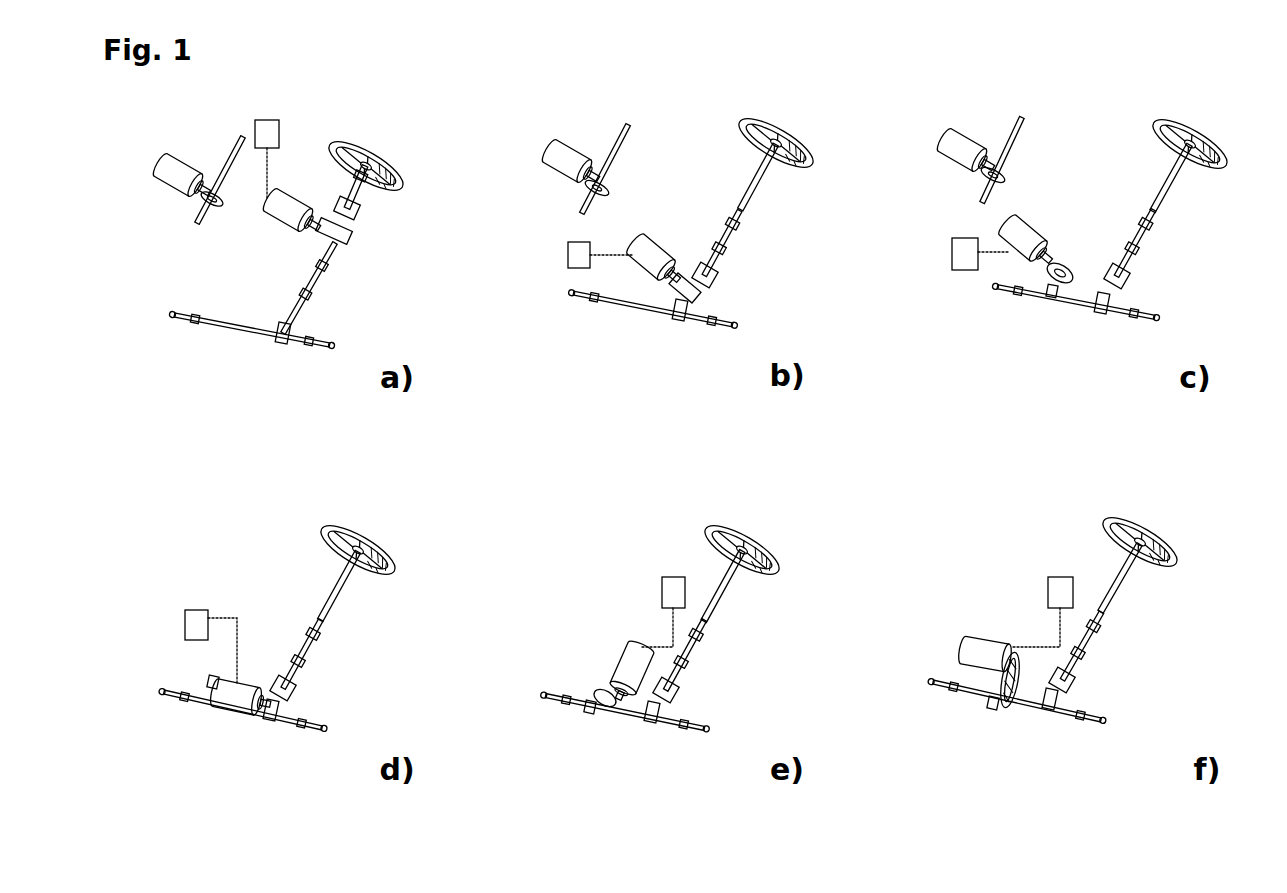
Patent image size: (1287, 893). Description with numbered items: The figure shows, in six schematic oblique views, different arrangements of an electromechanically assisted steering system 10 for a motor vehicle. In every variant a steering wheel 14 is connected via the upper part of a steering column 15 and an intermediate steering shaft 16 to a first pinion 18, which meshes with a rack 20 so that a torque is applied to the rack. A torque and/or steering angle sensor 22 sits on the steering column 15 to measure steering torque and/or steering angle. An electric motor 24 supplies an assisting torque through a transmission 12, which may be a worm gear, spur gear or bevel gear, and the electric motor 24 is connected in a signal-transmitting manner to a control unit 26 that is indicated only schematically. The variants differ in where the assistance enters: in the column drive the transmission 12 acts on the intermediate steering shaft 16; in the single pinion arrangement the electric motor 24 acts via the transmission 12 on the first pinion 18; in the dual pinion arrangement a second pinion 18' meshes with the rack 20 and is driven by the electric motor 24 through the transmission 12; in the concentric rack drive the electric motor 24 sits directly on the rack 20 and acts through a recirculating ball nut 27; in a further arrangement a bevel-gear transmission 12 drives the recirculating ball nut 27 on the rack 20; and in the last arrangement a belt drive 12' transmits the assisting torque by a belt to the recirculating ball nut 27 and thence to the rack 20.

The steering system 10 is at (331, 104).
The transmission 12 is at (708, 446).
The belt drive 12' is at (1022, 710).
The steering wheel 14 is at (383, 163).
The steering column 15 is at (367, 196).
The intermediate steering shaft 16 is at (239, 140).
The first pinion 18 is at (714, 538).
The second pinion 18' is at (980, 259).
The rack 20 is at (222, 323).
The torque and/or steering angle sensor 22 is at (337, 200).
The electric motor 24 is at (182, 159).
The control unit 26 is at (267, 120).
The recirculating ball nut 27 is at (210, 681).